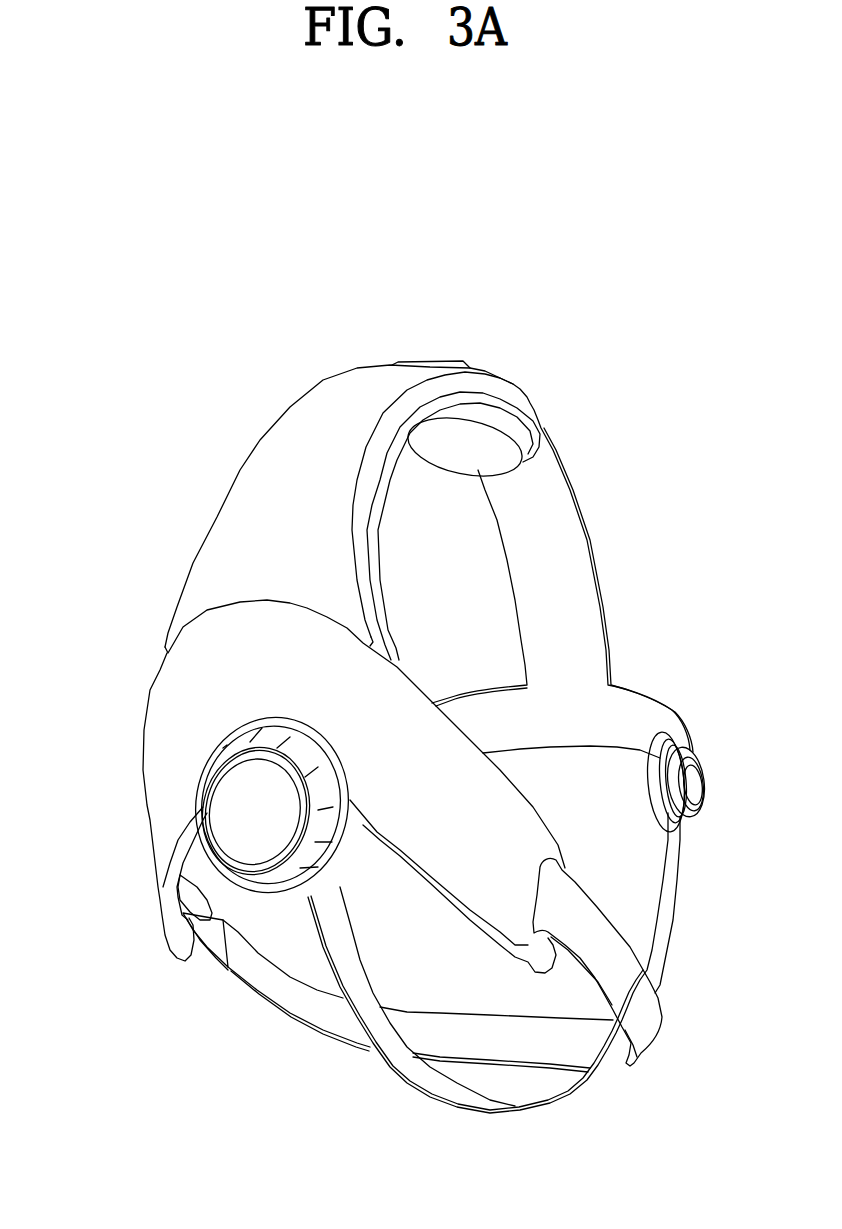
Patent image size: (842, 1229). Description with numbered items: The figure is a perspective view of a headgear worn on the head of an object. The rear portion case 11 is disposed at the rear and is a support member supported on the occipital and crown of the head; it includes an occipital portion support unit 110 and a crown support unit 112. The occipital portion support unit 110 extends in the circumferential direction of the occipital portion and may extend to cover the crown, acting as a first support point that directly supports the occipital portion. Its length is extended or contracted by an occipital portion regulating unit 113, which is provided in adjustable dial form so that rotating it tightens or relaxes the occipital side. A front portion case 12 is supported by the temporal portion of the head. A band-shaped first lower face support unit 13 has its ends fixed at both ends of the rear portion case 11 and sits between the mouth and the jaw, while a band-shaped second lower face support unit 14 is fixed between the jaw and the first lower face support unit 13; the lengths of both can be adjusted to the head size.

The rear portion case 11 is at (136, 645).
The occipital portion support unit 110 is at (160, 738).
The crown support unit 112 is at (523, 452).
The occipital portion regulating unit 113 is at (203, 805).
The front portion case 12 is at (618, 587).
The first lower face support unit 13 is at (643, 1023).
The second lower face support unit 14 is at (673, 893).